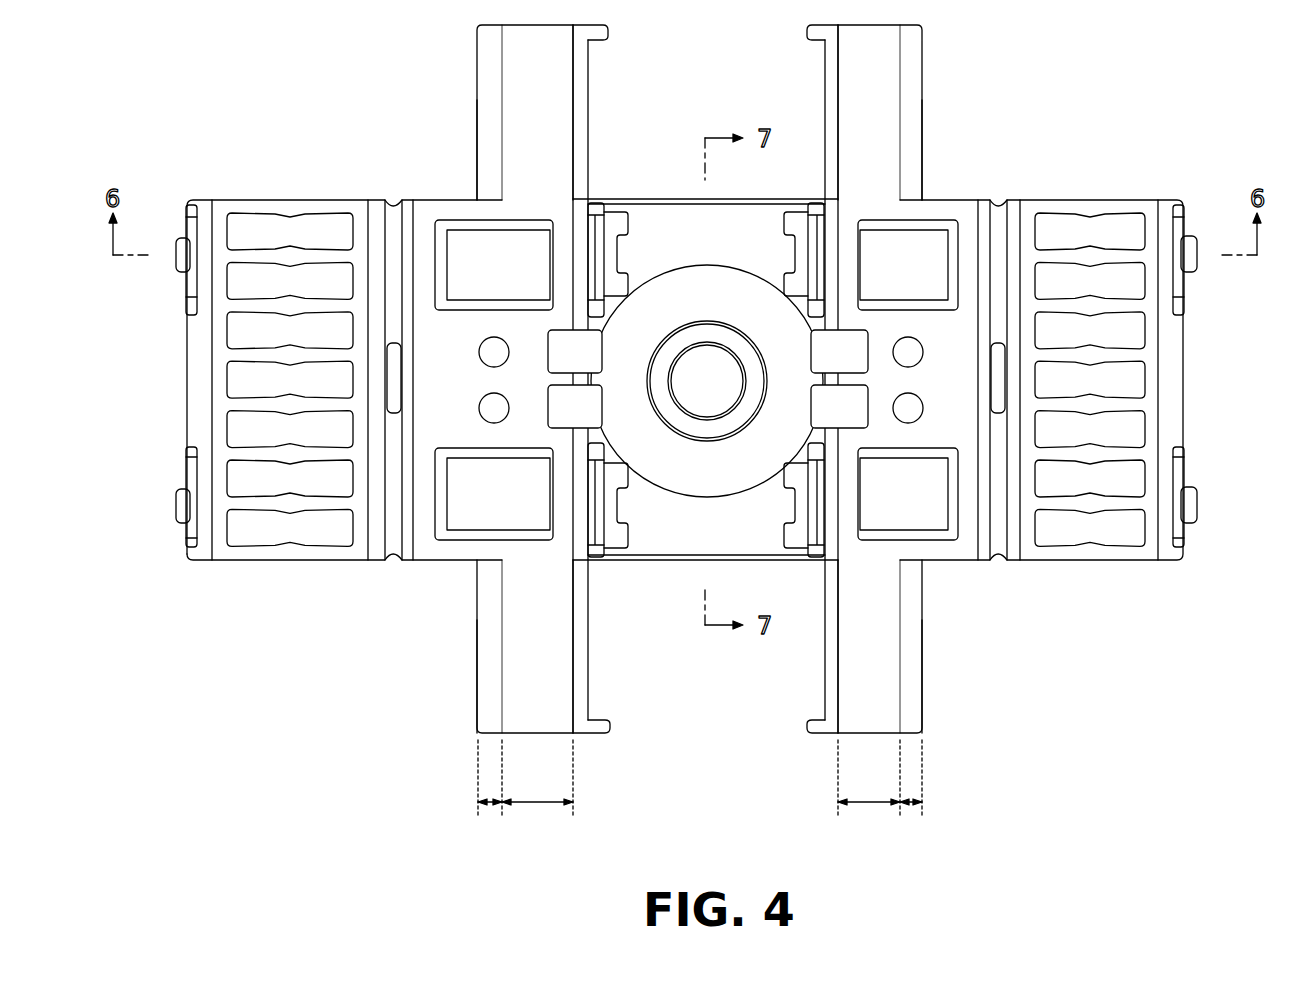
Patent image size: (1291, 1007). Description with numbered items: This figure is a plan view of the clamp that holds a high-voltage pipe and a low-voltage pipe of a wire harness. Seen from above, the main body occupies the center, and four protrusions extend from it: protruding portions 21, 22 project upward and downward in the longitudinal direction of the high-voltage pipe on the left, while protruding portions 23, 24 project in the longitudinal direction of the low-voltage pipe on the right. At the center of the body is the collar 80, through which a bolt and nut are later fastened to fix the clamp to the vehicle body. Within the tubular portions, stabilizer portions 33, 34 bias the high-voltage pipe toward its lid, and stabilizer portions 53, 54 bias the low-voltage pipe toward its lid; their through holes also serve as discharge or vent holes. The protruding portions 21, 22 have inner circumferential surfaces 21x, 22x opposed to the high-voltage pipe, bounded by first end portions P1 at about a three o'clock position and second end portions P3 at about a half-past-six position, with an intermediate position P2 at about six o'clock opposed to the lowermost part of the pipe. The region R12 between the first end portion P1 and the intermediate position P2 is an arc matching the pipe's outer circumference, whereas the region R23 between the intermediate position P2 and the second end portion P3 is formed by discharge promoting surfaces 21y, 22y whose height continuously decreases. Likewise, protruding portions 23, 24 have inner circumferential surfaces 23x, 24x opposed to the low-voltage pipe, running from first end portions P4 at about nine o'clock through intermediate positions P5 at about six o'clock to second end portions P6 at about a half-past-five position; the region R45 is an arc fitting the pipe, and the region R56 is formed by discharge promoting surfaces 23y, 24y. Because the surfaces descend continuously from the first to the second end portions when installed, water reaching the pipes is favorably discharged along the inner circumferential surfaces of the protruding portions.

The protruding portion 21 is at (477, 653).
The inner circumferential surface 21x is at (558, 667).
The discharge promoting surface 21y is at (481, 693).
The protruding portion 22 is at (477, 76).
The inner circumferential surface 22x is at (558, 67).
The discharge promoting surface 22y is at (481, 112).
The protruding portion 23 is at (925, 655).
The inner circumferential surface 23x is at (852, 672).
The discharge promoting surface 23y is at (918, 695).
The protruding portion 24 is at (925, 72).
The inner circumferential surface 24x is at (852, 70).
The discharge promoting surface 24y is at (918, 112).
The stabilizer portion 33 is at (462, 507).
The stabilizer portion 34 is at (457, 242).
The stabilizer portion 53 is at (928, 513).
The stabilizer portion 54 is at (932, 240).
The collar 80 is at (700, 431).
The region R12 is at (540, 800).
The region R23 is at (489, 800).
The region R45 is at (870, 800).
The region R56 is at (912, 800).
The first end portion P1 is at (577, 832).
The intermediate position P2 is at (509, 832).
The second end portion P3 is at (476, 832).
The first end portion P4 is at (841, 832).
The intermediate position P5 is at (897, 832).
The second end portion P6 is at (931, 832).